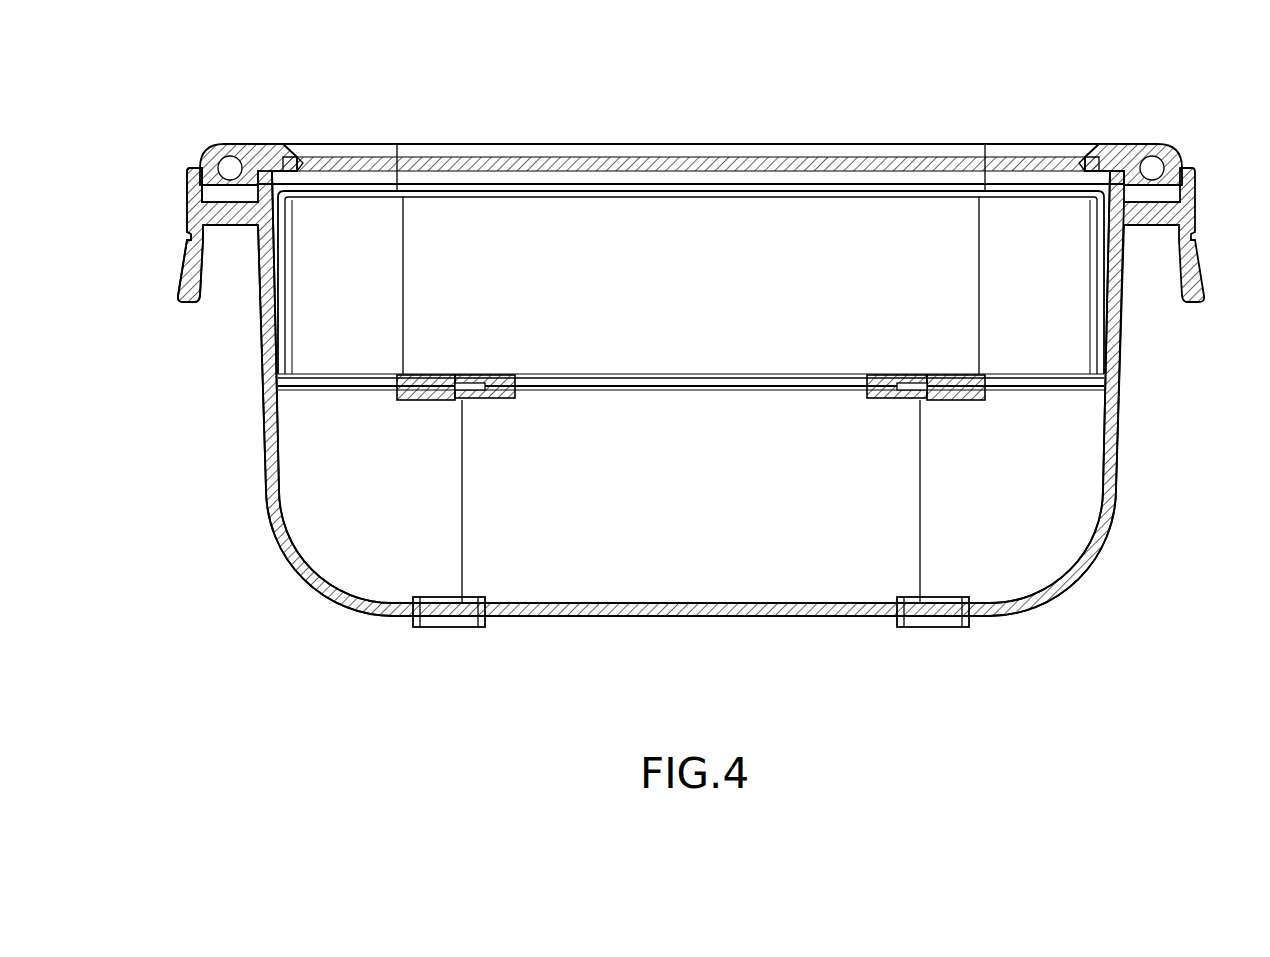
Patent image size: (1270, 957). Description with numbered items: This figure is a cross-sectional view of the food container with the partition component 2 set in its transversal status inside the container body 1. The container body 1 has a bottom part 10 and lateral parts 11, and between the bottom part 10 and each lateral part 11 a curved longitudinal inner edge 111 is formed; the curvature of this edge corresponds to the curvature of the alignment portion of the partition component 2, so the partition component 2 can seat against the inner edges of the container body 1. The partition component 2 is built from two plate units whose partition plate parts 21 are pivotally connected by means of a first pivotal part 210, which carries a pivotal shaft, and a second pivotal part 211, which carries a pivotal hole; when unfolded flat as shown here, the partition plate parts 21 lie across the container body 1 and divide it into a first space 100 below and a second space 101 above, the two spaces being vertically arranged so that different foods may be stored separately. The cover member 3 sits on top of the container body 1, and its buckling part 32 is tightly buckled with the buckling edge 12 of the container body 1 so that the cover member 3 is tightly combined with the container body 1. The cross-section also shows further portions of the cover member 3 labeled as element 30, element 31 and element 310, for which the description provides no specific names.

The container body 1 is at (670, 396).
The partition component 2 is at (644, 380).
The cover member 3 is at (682, 111).
The bottom part 10 is at (712, 610).
The lateral part 11 is at (1115, 413).
The buckling edge 12 is at (232, 212).
The partition plate part 21 is at (690, 375).
The sealing ring 30 is at (625, 165).
The lid hook 31 is at (229, 152).
The buckling part 32 is at (186, 240).
The first space 100 is at (792, 551).
The second space 101 is at (793, 248).
The longitudinal inner edge 111 is at (1096, 548).
The first pivotal part 210 is at (413, 394).
The second pivotal part 211 is at (507, 398).
The lid engaging portion 310 is at (268, 158).